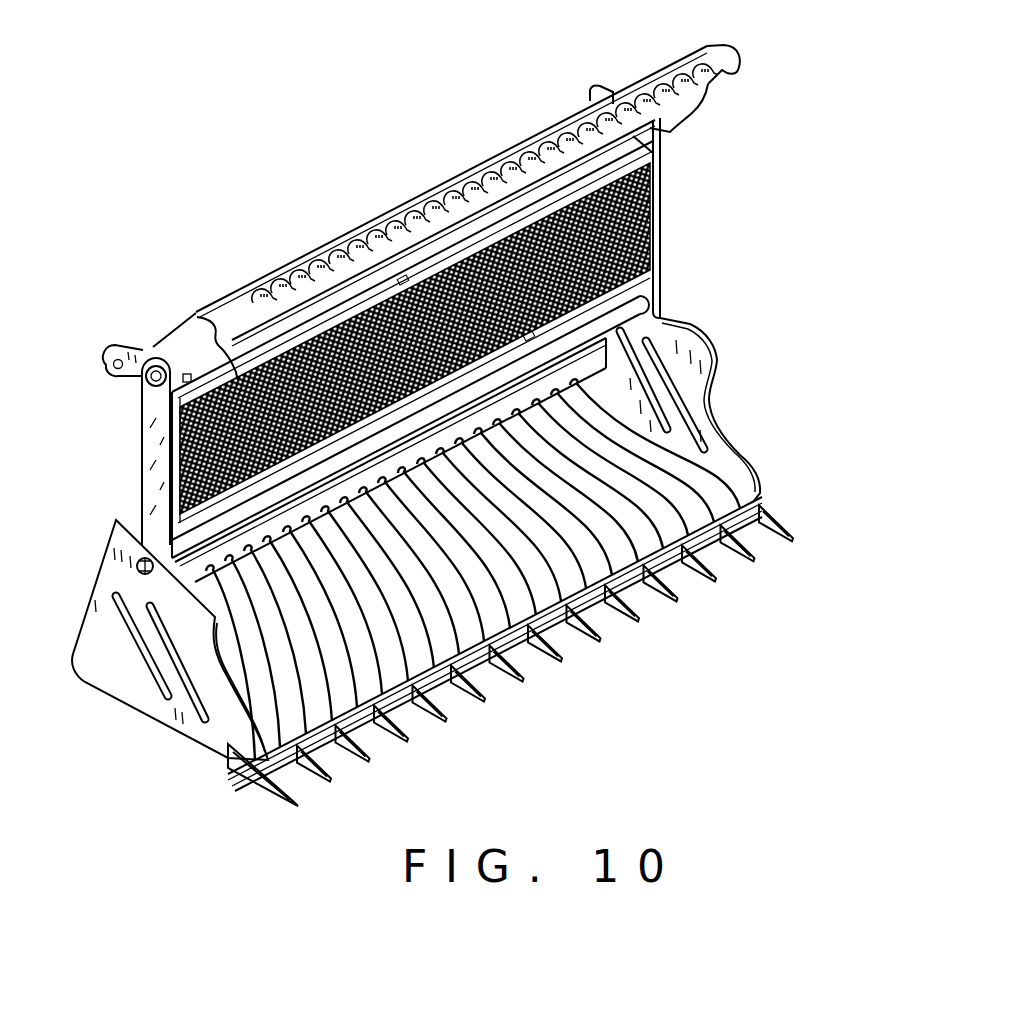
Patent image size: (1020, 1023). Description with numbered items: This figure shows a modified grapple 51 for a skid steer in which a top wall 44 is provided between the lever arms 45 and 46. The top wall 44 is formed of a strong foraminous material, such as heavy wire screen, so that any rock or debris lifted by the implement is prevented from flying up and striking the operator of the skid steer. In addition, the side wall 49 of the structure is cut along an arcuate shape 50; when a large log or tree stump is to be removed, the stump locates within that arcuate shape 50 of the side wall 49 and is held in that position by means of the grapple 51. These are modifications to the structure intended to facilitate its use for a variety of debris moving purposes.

The top wall 44 is at (498, 242).
The lever arm 45 is at (147, 432).
The lever arm 46 is at (658, 181).
The side wall 49 is at (689, 320).
The arcuate shape 50 is at (722, 420).
The grapple 51 is at (345, 186).